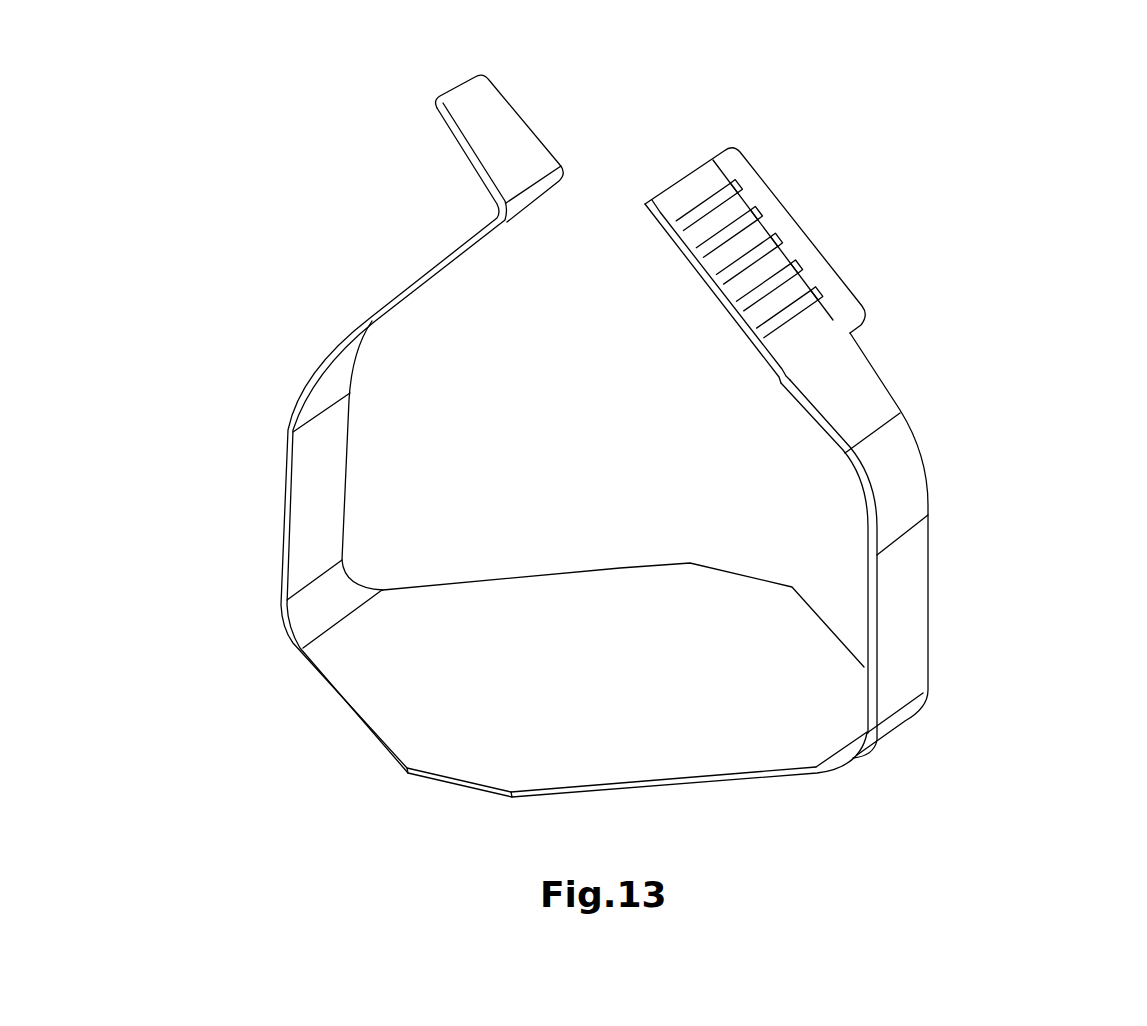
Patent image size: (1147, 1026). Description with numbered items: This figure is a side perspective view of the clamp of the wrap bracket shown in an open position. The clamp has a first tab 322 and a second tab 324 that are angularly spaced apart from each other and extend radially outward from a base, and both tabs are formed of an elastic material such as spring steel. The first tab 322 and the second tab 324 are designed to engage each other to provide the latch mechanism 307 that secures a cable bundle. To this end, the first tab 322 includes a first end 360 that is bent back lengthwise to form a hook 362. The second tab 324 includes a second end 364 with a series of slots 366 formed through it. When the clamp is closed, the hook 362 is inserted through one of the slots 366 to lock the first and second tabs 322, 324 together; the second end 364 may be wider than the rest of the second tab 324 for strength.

The first end 360 is at (407, 173).
The hook 362 is at (500, 132).
The latch mechanism 307 is at (750, 111).
The second end 364 is at (819, 217).
The slots 366 is at (762, 375).
The first tab 322 is at (276, 437).
The second tab 324 is at (948, 519).